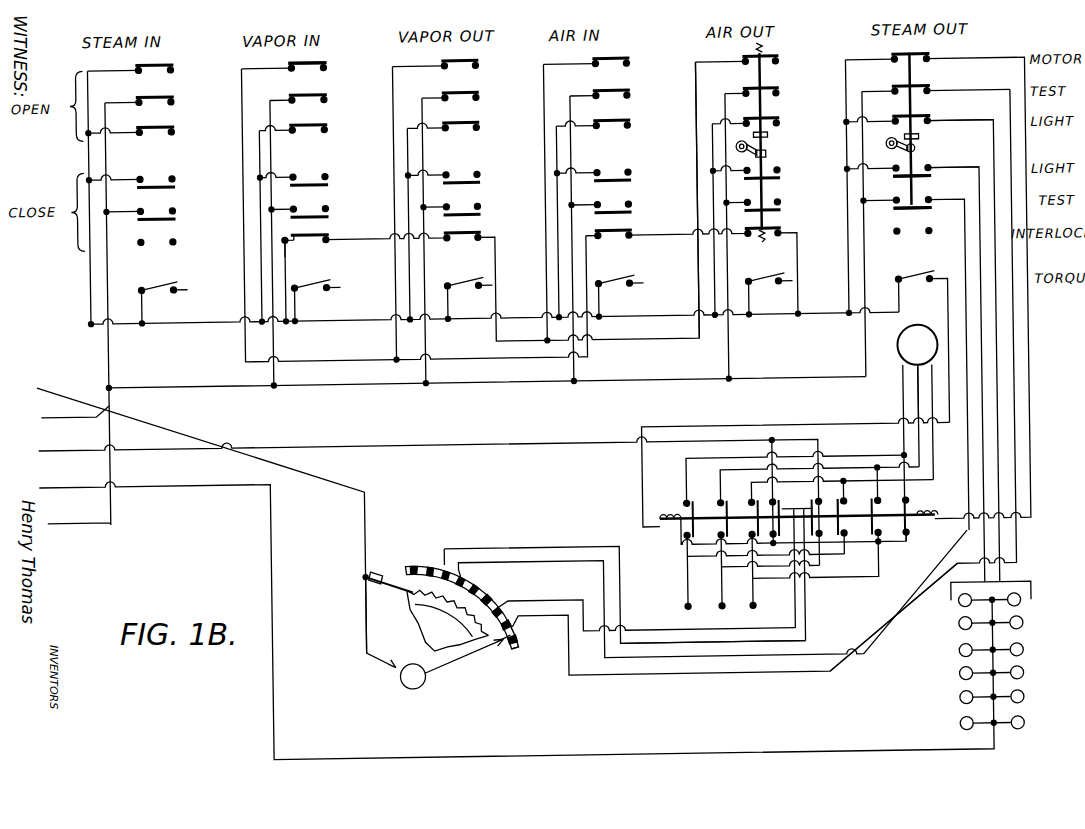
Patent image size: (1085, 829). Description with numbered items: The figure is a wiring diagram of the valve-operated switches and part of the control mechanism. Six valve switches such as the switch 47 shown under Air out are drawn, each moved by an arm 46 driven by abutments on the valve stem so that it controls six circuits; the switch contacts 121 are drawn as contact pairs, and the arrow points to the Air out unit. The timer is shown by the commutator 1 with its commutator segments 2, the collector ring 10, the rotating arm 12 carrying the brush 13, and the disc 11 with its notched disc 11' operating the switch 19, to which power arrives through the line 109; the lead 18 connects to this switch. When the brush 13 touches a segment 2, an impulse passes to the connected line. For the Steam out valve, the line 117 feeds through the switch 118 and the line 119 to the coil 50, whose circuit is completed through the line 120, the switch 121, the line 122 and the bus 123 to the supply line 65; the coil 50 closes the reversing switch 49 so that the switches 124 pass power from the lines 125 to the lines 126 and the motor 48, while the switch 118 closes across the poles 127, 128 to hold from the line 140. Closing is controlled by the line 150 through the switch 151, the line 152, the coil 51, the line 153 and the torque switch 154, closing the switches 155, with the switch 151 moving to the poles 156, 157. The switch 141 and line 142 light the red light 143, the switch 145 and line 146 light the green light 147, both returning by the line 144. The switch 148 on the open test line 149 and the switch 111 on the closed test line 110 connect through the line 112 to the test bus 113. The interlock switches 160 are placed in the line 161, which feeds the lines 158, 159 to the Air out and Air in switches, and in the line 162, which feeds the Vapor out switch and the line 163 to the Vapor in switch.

The commutator 1 is at (417, 570).
The commutator segment 2 is at (517, 644).
The collector ring 10 is at (406, 692).
The disc 11 is at (436, 620).
The notched disc 11' is at (444, 612).
The rotating arm 12 is at (468, 654).
The brush 13 is at (506, 651).
The brush lead 18 is at (359, 612).
The switch 19 is at (370, 577).
The arm 46 is at (771, 161).
The switch 47 is at (794, 110).
The motor 48 is at (918, 413).
The three-phase reversing switch 49 is at (673, 571).
The solenoid coil 50 is at (922, 524).
The solenoid coil 51 is at (662, 522).
The supply line 65 is at (47, 417).
The line 109 is at (46, 387).
The closed test line 110 is at (712, 681).
The switch 111 is at (933, 217).
The line 112 is at (866, 270).
The test bus 113 is at (647, 388).
The line 117 is at (801, 626).
The switch 118 is at (830, 509).
The line 119 is at (917, 546).
The line 120 is at (1030, 343).
The switch 121 is at (322, 75).
The line 122 is at (849, 66).
The bus line 123 is at (190, 327).
The switch 124 is at (855, 512).
The lines 125 is at (748, 610).
The lines 126 is at (902, 413).
The pole 127 is at (810, 510).
The pole 128 is at (831, 543).
The line 140 is at (48, 450).
The switch 141 is at (934, 185).
The line 142 is at (948, 180).
The red light 143 is at (964, 613).
The line 144 is at (48, 487).
The switch 145 is at (930, 136).
The line 146 is at (1000, 566).
The green light 147 is at (1018, 611).
The switch 148 is at (928, 108).
The open test line 149 is at (1015, 381).
The line 150 is at (719, 638).
The switch 151 is at (765, 511).
The line 152 is at (674, 546).
The line 153 is at (767, 441).
The torque switch 154 is at (918, 289).
The switch 155 is at (700, 505).
The pole 156 is at (776, 510).
The pole 157 is at (776, 537).
The line 158 is at (699, 72).
The line 159 is at (546, 270).
The interlock switch 160 is at (318, 242).
The line 161 is at (288, 270).
The line 162 is at (396, 94).
The line 163 is at (244, 90).